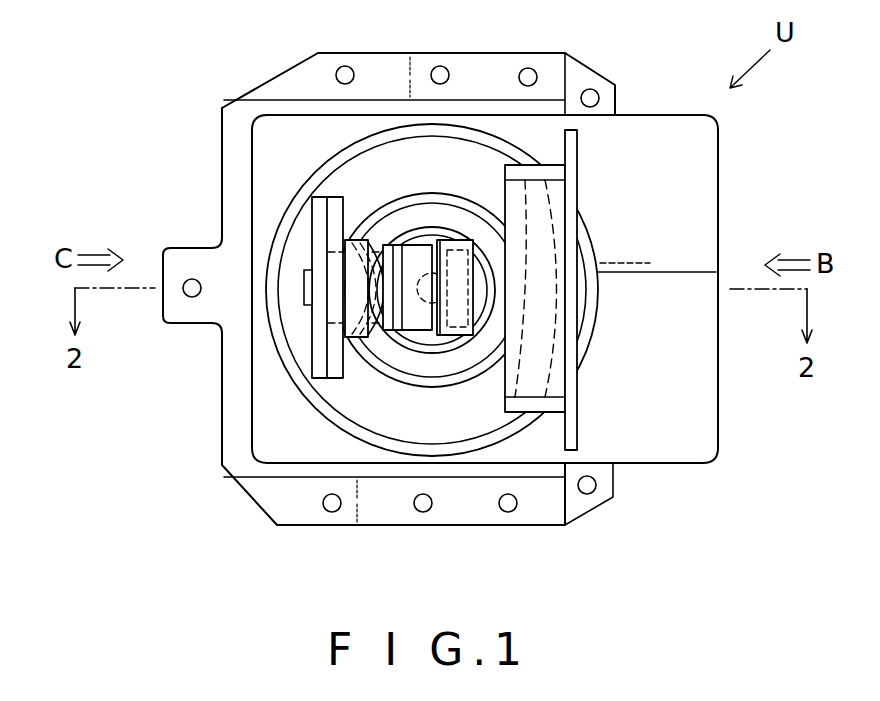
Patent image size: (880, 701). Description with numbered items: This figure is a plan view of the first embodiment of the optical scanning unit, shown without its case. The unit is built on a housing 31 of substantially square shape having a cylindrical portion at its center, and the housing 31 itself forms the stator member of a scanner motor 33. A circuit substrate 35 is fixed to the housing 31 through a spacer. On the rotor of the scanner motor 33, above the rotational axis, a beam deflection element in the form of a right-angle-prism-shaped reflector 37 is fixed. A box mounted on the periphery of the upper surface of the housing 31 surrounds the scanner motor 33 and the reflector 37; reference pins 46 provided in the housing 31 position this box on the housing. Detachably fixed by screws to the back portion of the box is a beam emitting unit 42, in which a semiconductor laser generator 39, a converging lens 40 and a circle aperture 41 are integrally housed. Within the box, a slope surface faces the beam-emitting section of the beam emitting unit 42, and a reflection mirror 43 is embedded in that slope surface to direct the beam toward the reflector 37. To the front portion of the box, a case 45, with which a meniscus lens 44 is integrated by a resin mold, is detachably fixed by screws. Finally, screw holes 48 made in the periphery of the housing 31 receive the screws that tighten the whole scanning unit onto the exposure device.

The housing 31 is at (277, 508).
The scanner motor 33 is at (349, 409).
The circuit substrate 35 is at (720, 422).
The reflector 37 is at (418, 323).
The semiconductor laser generator 39 is at (307, 305).
The converging lens 40 is at (350, 272).
The circle aperture 41 is at (381, 248).
The beam emitting unit 42 is at (318, 223).
The reflection mirror 43 is at (462, 240).
The meniscus lens 44 is at (545, 222).
The case 45 is at (578, 150).
The reference pins 46 is at (440, 66).
The screw holes 48 is at (343, 66).